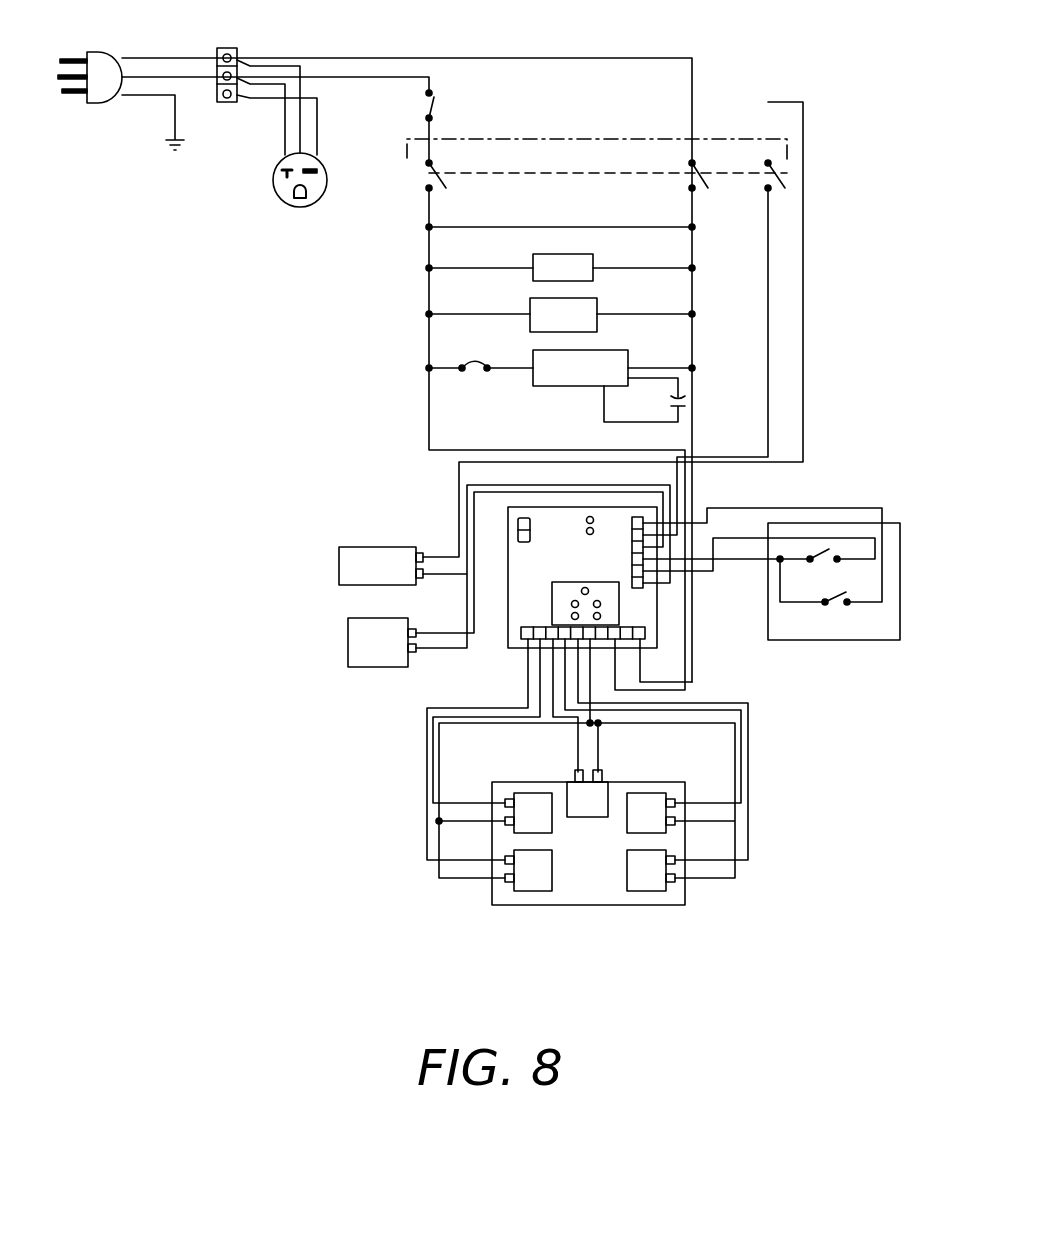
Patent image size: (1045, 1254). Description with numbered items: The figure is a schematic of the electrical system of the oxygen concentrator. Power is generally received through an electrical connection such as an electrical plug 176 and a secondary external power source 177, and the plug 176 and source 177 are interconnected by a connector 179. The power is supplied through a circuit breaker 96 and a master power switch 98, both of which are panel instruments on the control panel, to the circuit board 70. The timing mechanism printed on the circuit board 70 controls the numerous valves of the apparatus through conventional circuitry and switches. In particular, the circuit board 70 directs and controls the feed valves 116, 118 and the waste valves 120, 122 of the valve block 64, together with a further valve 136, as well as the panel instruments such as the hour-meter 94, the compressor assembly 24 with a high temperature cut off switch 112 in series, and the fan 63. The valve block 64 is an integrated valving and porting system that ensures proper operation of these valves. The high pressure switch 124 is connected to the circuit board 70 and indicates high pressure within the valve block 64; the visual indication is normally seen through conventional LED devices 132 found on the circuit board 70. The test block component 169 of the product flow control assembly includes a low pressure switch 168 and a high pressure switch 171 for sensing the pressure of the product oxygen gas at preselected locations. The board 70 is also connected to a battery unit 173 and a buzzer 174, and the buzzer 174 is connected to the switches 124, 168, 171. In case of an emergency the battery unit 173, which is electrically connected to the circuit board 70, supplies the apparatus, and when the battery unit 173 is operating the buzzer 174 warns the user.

The electrical plug 176 is at (106, 50).
The connector 179 is at (232, 48).
The secondary external power source 177 is at (296, 207).
The circuit breaker 96 is at (440, 117).
The master power switch 98 is at (706, 138).
The fan 63 is at (588, 254).
The hour-meter 94 is at (602, 305).
The high temperature cut off switch 112 is at (471, 360).
The compressor assembly 24 is at (632, 351).
The battery unit 173 is at (388, 547).
The buzzer 174 is at (348, 640).
The circuit board 70 is at (578, 543).
The LED devices 132 is at (570, 582).
The low pressure switch 168 is at (829, 549).
The high pressure switch 124 is at (885, 636).
The high pressure switch 171 is at (840, 605).
The test block component 169 is at (810, 640).
The valve block 64 is at (583, 847).
The feed valve 118 is at (522, 793).
The waste valve 122 is at (527, 891).
The feed valve 116 is at (670, 833).
The waste valve 120 is at (650, 891).
The valve 136 is at (608, 780).